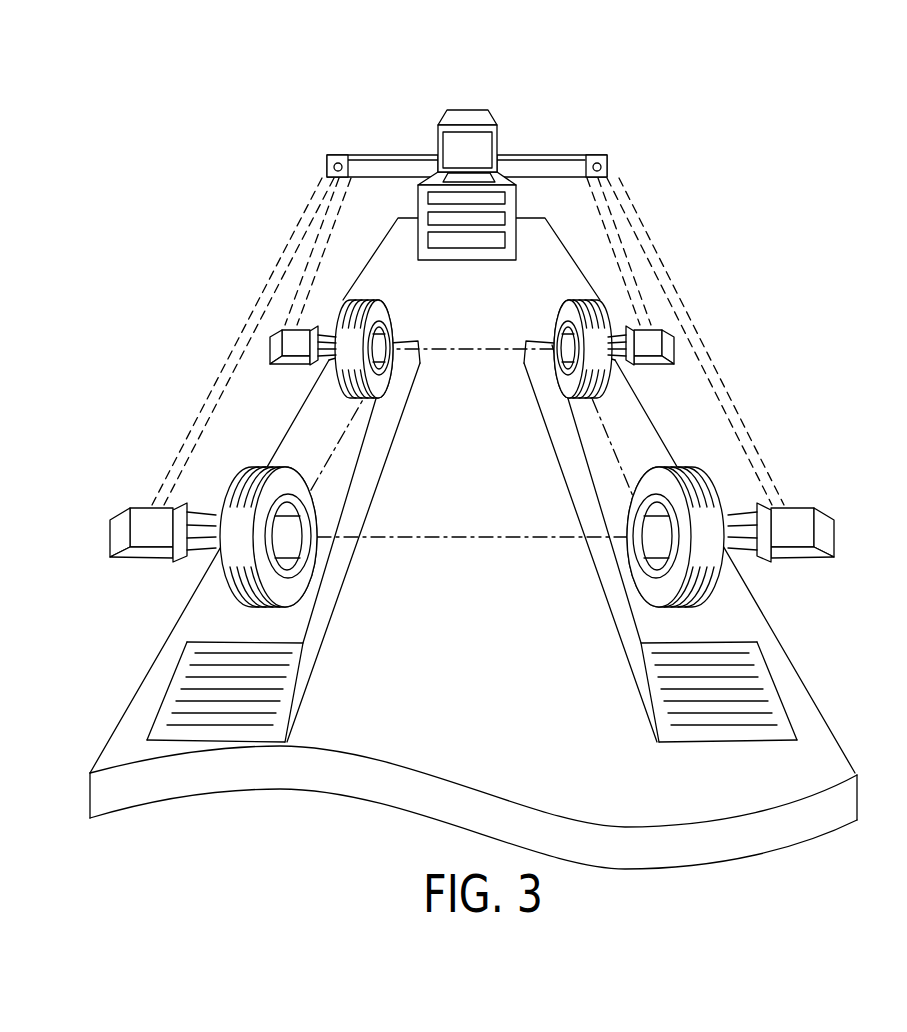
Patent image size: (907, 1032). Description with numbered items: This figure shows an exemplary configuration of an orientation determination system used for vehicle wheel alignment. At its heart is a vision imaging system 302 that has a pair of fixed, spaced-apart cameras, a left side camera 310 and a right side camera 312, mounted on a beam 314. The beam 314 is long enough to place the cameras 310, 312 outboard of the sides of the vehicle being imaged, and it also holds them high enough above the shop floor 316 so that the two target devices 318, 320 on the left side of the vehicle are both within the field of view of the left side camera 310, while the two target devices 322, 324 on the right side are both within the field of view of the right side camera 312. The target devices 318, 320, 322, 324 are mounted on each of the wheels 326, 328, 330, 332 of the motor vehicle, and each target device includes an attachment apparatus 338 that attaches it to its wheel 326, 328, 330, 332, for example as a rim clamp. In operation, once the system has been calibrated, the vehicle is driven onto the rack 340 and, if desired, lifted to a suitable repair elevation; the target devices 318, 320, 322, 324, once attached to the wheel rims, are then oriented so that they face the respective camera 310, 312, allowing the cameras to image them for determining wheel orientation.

The vision imaging system 302 is at (466, 139).
The left side camera 310 is at (335, 155).
The right side camera 312 is at (596, 155).
The beam 314 is at (402, 154).
The shop floor 316 is at (392, 248).
The target device 318 is at (272, 342).
The target device 320 is at (118, 536).
The target device 322 is at (672, 342).
The target device 324 is at (815, 557).
The wheel 326 is at (382, 382).
The wheel 328 is at (298, 593).
The wheel 330 is at (562, 382).
The wheel 332 is at (648, 588).
The attachment apparatus 338 is at (777, 563).
The rack 340 is at (312, 650).